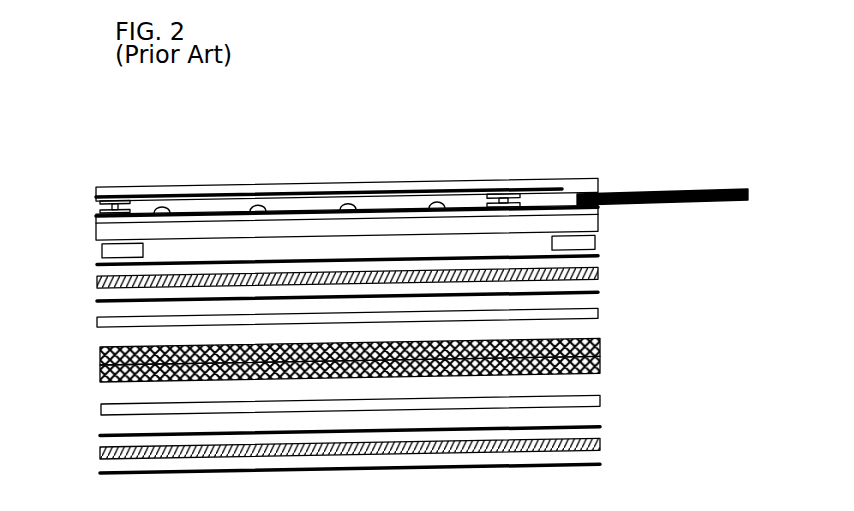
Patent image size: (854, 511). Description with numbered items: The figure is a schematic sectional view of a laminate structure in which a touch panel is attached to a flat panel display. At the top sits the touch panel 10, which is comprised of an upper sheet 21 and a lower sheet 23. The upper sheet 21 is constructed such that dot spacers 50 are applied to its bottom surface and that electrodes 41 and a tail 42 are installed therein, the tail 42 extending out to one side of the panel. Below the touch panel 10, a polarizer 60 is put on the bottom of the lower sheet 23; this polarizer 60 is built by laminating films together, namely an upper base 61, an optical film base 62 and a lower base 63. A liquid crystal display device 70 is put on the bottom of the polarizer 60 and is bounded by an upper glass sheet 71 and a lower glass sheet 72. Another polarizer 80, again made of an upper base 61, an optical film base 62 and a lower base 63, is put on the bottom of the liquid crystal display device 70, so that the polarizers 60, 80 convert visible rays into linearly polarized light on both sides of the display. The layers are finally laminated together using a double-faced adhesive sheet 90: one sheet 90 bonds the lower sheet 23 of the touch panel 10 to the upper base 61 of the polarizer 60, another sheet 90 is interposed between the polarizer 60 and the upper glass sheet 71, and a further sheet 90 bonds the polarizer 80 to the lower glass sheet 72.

The touch panel 10 is at (87, 193).
The upper sheet 21 is at (330, 187).
The lower sheet 23 is at (598, 218).
The electrodes 41 is at (490, 200).
The tail 42 is at (676, 192).
The dot spacers 50 is at (437, 207).
The polarizer 60 is at (87, 265).
The upper base 61 is at (598, 255).
The optical film base 62 is at (598, 272).
The lower base 63 is at (598, 291).
The liquid crystal display device 70 is at (87, 347).
The upper glass sheet 71 is at (600, 343).
The lower glass sheet 72 is at (600, 366).
The polarizer 80 is at (87, 432).
The double-faced adhesive sheet 90 is at (128, 252).